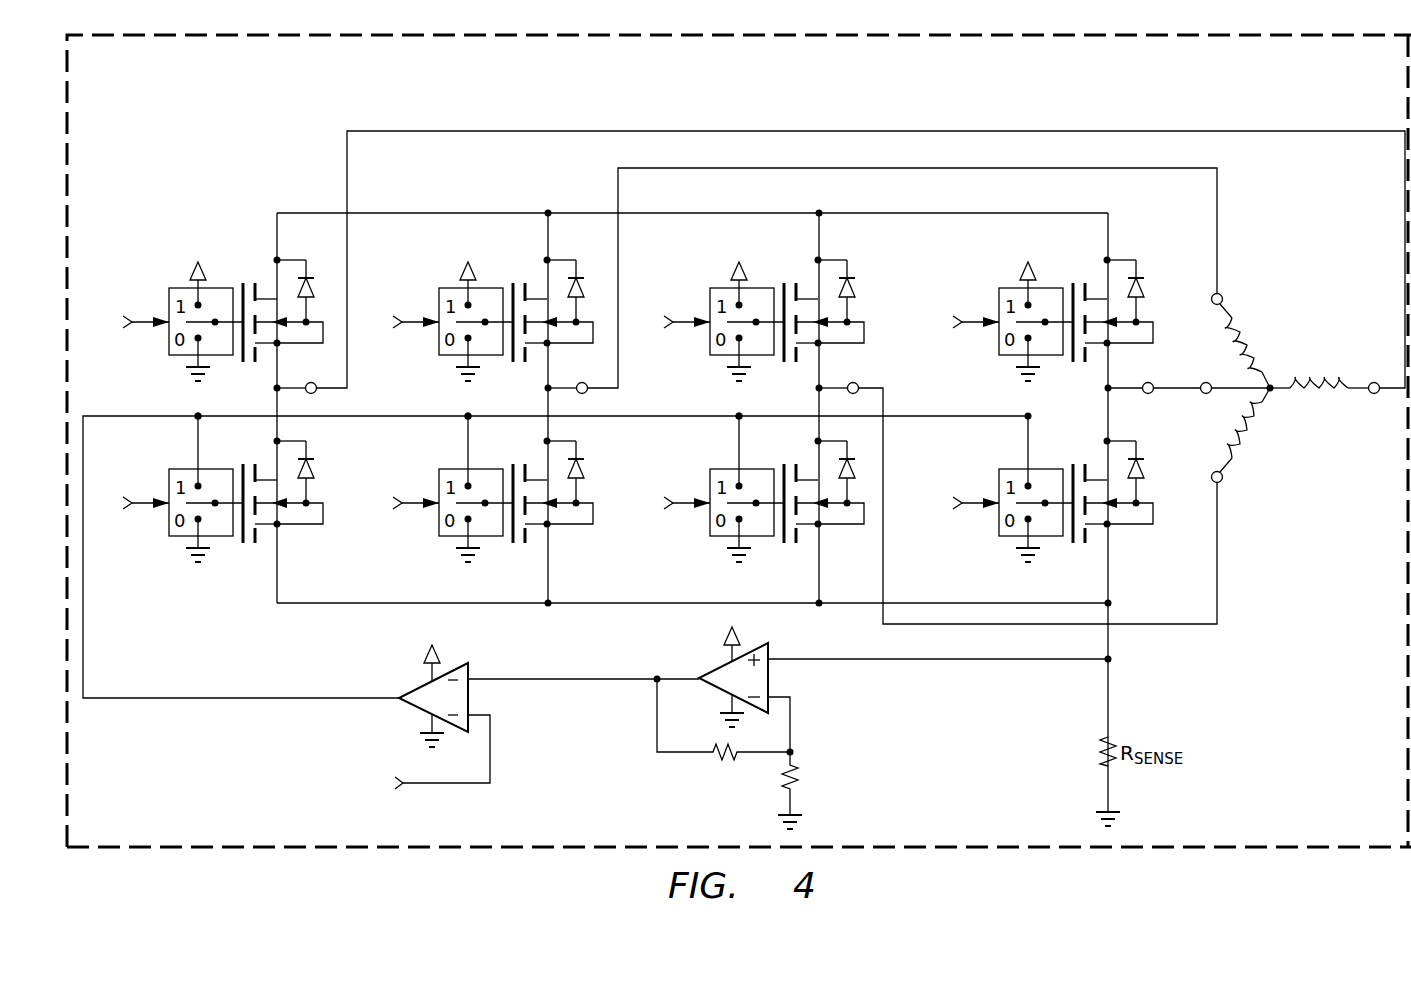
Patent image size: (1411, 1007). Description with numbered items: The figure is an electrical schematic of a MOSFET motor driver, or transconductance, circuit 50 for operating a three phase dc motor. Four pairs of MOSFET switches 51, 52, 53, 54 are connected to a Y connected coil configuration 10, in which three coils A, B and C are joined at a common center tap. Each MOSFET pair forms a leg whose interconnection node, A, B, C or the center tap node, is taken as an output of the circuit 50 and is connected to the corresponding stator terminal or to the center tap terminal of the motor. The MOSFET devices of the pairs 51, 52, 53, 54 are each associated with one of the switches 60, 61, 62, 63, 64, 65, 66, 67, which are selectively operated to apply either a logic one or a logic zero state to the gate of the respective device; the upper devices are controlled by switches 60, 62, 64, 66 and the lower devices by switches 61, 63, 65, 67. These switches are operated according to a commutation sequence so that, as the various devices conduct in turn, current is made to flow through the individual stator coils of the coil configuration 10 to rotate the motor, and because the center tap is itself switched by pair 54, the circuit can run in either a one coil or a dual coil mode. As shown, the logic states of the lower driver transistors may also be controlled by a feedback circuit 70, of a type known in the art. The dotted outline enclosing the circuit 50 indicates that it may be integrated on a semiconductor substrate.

The Y connected coil configuration 10 is at (1326, 430).
The circuit 50 is at (1350, 106).
The pair of MOSFET switches 51 is at (306, 172).
The pair of MOSFET switches 52 is at (582, 112).
The pair of MOSFET switches 53 is at (875, 112).
The pair of MOSFET switches 54 is at (1165, 106).
The switch 60 is at (223, 288).
The switch 61 is at (220, 538).
The switch 62 is at (493, 288).
The switch 63 is at (490, 538).
The switch 64 is at (764, 288).
The switch 65 is at (761, 538).
The switch 66 is at (1053, 288).
The switch 67 is at (1050, 538).
The feedback circuit 70 is at (375, 730).